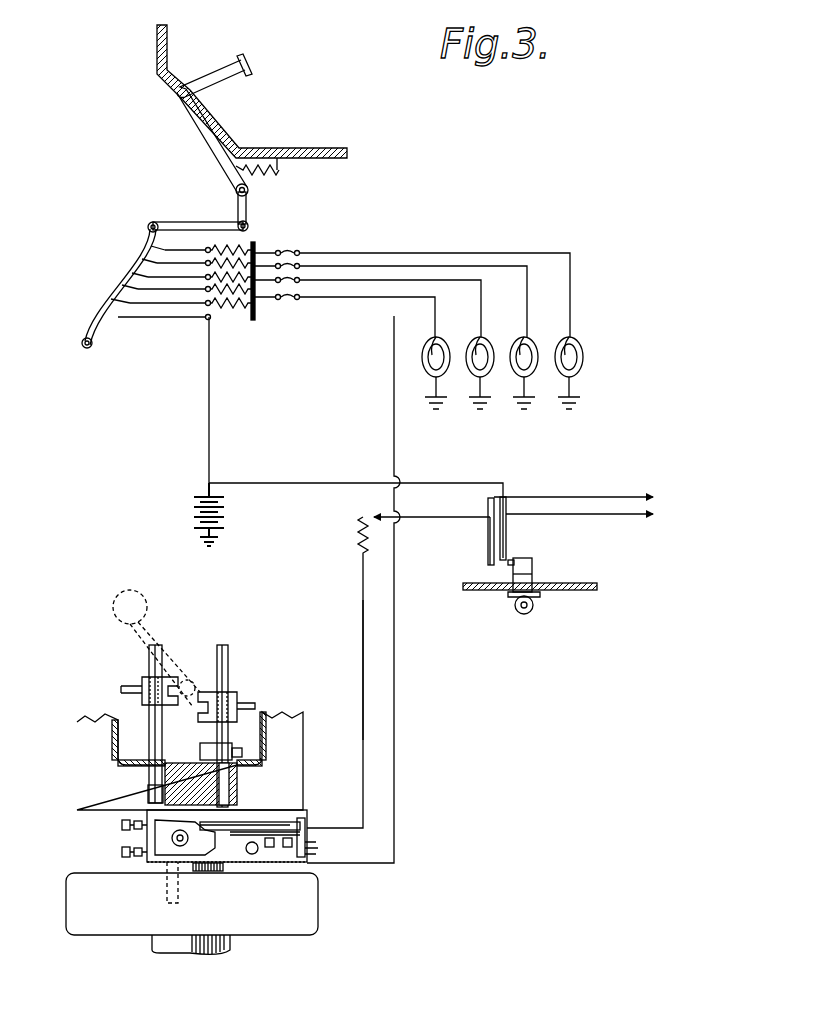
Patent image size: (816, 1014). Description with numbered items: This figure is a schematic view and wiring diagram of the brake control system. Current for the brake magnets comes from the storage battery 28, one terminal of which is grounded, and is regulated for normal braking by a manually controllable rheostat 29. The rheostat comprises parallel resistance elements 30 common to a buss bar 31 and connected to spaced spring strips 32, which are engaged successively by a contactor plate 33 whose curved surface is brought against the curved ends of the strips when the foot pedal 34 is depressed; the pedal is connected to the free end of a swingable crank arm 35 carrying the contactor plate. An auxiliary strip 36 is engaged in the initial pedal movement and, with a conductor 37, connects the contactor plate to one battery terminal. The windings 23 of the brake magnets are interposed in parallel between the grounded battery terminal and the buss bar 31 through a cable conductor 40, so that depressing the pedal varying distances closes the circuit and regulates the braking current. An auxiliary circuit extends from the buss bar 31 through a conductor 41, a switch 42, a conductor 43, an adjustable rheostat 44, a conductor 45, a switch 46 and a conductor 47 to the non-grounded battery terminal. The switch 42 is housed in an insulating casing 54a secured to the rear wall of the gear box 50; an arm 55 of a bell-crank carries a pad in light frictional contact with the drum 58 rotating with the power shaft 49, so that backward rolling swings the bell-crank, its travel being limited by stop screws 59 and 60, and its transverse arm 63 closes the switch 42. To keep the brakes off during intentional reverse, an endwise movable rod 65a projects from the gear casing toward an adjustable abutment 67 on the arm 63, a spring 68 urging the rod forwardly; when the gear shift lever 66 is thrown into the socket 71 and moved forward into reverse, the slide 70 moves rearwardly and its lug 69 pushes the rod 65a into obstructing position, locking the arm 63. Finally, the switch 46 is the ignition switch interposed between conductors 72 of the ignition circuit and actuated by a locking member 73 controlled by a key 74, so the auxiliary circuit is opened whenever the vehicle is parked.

The windings 23 is at (585, 342).
The storage battery 28 is at (222, 519).
The rheostat 29 is at (139, 227).
The resistance elements 30 is at (243, 243).
The buss bar 31 is at (252, 320).
The spring strips 32 is at (141, 296).
The contactor plate 33 is at (168, 252).
The foot pedal 34 is at (227, 72).
The crank arm 35 is at (150, 233).
The auxiliary strip 36 is at (141, 319).
The conductor 37 is at (208, 428).
The cable conductor 40 is at (432, 262).
The conductor 41 is at (393, 432).
The switch 42 is at (237, 823).
The conductor 43 is at (363, 673).
The adjustable rheostat 44 is at (357, 530).
The conductor 45 is at (425, 518).
The switch 46 is at (488, 566).
The conductor 47 is at (430, 480).
The power shaft 49 is at (175, 945).
The gear box 50 is at (268, 742).
The casing 54a is at (296, 813).
The arm 55 is at (172, 868).
The drum 58 is at (310, 900).
The screw 59 is at (122, 826).
The screw 60 is at (122, 853).
The arm 63 is at (212, 866).
The rod 65a is at (200, 762).
The gear shift lever 66 is at (133, 590).
The abutment 67 is at (149, 797).
The spring 68 is at (235, 822).
The lug 69 is at (200, 748).
The slide 70 is at (230, 665).
The socket 71 is at (208, 690).
The conductors 72 is at (583, 513).
The locking member 73 is at (533, 569).
The key 74 is at (536, 608).